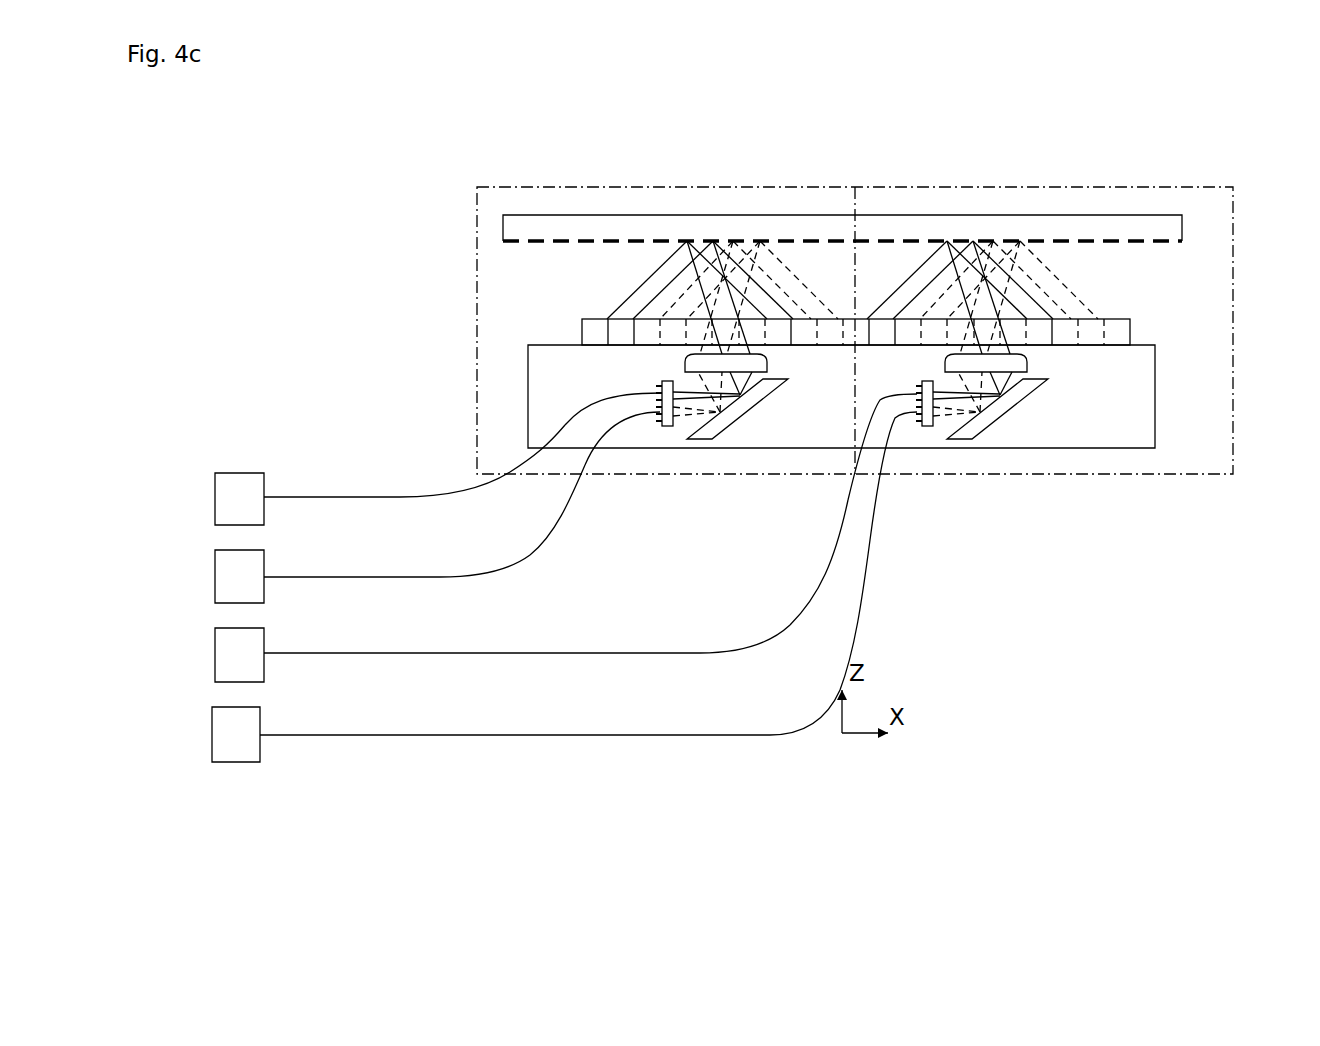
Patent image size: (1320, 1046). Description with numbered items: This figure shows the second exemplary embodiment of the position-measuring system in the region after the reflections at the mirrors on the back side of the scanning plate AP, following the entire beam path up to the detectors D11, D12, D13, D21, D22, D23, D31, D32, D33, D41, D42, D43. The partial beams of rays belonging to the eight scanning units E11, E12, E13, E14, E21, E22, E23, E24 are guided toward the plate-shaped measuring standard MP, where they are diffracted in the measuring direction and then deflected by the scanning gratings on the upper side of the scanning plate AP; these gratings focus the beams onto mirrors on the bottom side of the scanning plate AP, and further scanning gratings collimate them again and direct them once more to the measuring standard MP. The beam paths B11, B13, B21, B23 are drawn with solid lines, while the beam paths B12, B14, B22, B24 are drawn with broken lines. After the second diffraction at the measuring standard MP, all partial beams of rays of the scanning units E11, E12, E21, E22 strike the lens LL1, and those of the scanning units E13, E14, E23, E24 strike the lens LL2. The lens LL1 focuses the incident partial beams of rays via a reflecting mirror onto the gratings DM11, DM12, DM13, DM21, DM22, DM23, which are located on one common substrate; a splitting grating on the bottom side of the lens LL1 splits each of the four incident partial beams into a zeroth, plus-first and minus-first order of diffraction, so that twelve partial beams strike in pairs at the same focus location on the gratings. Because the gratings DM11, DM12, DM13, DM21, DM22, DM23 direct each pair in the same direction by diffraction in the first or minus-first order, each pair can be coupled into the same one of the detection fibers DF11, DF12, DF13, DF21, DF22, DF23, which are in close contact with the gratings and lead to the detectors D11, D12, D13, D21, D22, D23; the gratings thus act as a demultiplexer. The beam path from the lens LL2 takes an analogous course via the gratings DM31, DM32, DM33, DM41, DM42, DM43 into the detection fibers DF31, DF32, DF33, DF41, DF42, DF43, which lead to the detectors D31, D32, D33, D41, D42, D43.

The measuring standard MP is at (568, 227).
The scanning plate AP is at (1118, 335).
The lens LL1 is at (783, 363).
The lens LL2 is at (1043, 367).
The beam path B11 is at (617, 298).
The beam path B12 is at (787, 273).
The beam path B13 is at (937, 273).
The beam path B14 is at (1093, 293).
The beam path B21 is at (647, 290).
The beam path B22 is at (817, 280).
The beam path B23 is at (900, 277).
The beam path B24 is at (1048, 280).
The grating DM11 is at (645, 385).
The grating DM12 is at (659, 393).
The grating DM13 is at (659, 400).
The grating DM21 is at (645, 405).
The grating DM22 is at (659, 414).
The grating DM23 is at (659, 421).
The grating DM31 is at (900, 393).
The grating DM32 is at (919, 393).
The grating DM33 is at (919, 400).
The grating DM41 is at (907, 430).
The grating DM42 is at (919, 414).
The grating DM43 is at (919, 421).
The detector D11 is at (156, 495).
The detector D12 is at (252, 486).
The detector D13 is at (239, 512).
The detector D21 is at (156, 574).
The detector D22 is at (252, 563).
The detector D23 is at (239, 589).
The detector D31 is at (156, 652).
The detector D32 is at (252, 641).
The detector D33 is at (239, 668).
The detector D41 is at (154, 731).
The detector D42 is at (248, 720).
The detector D43 is at (236, 748).
The detection fiber DF11 is at (387, 479).
The detection fiber DF12 is at (537, 448).
The detection fiber DF13 is at (612, 409).
The detection fiber DF21 is at (397, 558).
The detection fiber DF22 is at (557, 510).
The detection fiber DF23 is at (622, 438).
The detection fiber DF31 is at (527, 639).
The detection fiber DF32 is at (819, 562).
The detection fiber DF33 is at (882, 447).
The detection fiber DF41 is at (550, 713).
The detection fiber DF42 is at (855, 615).
The detection fiber DF43 is at (893, 476).
The scanning unit E11 is at (648, 431).
The scanning unit E12 is at (640, 396).
The scanning unit E13 is at (991, 431).
The scanning unit E14 is at (960, 396).
The scanning unit E21 is at (720, 396).
The scanning unit E22 is at (800, 396).
The scanning unit E23 is at (1040, 396).
The scanning unit E24 is at (1117, 396).